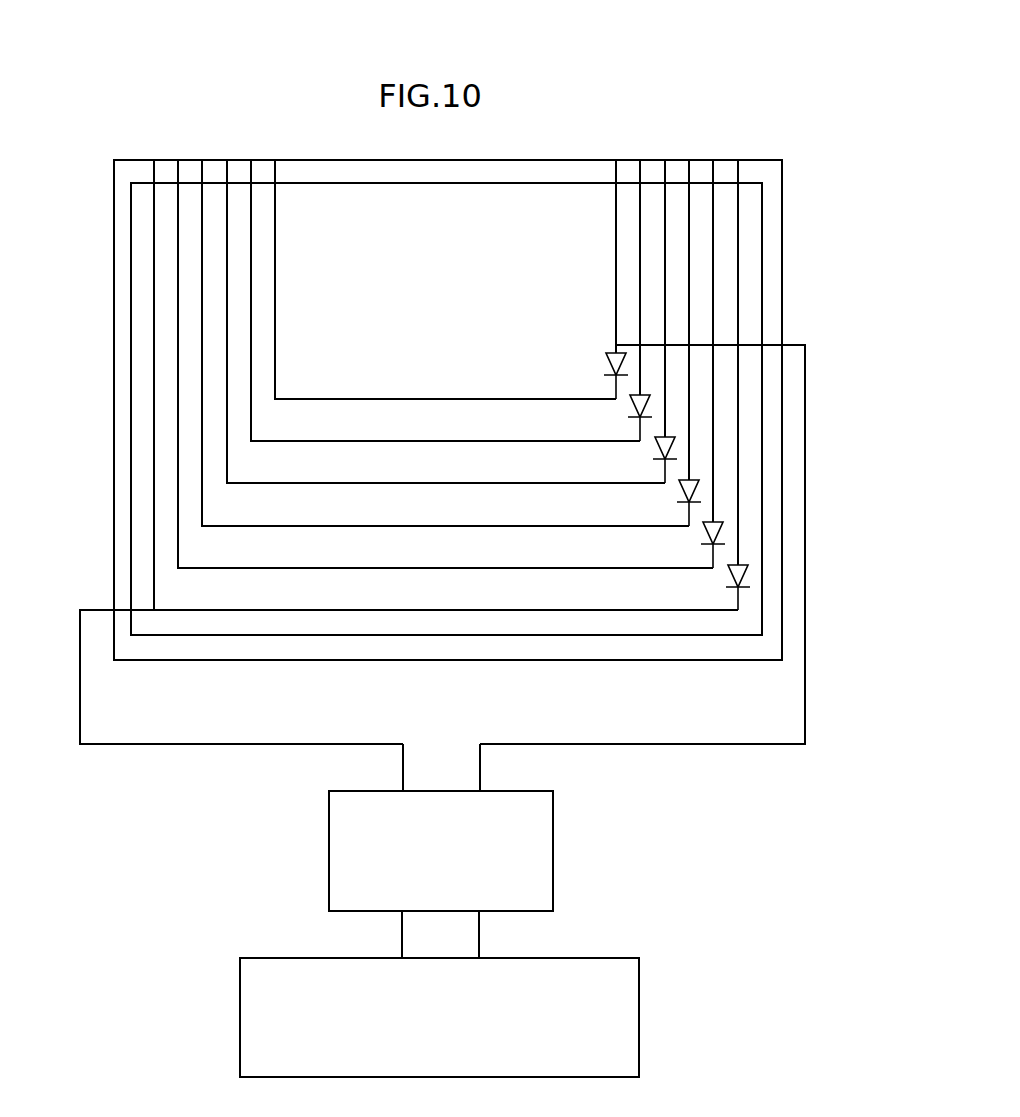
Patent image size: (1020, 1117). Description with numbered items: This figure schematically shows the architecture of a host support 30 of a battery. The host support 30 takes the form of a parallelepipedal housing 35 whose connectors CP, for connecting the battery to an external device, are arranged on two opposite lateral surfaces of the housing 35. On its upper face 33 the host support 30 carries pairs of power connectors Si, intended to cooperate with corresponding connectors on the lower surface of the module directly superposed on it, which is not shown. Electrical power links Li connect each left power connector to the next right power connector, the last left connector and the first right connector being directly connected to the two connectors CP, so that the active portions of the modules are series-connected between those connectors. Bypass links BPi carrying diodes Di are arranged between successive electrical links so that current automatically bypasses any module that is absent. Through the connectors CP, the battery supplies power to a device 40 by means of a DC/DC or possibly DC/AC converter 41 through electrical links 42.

The host support 30 is at (790, 140).
The upper face 33 is at (529, 158).
The parallelepipedal housing 35 is at (113, 395).
The device 40 is at (639, 1020).
The DC/DC or DC/AC converter 41 is at (553, 852).
The electrical links 42 is at (402, 935).